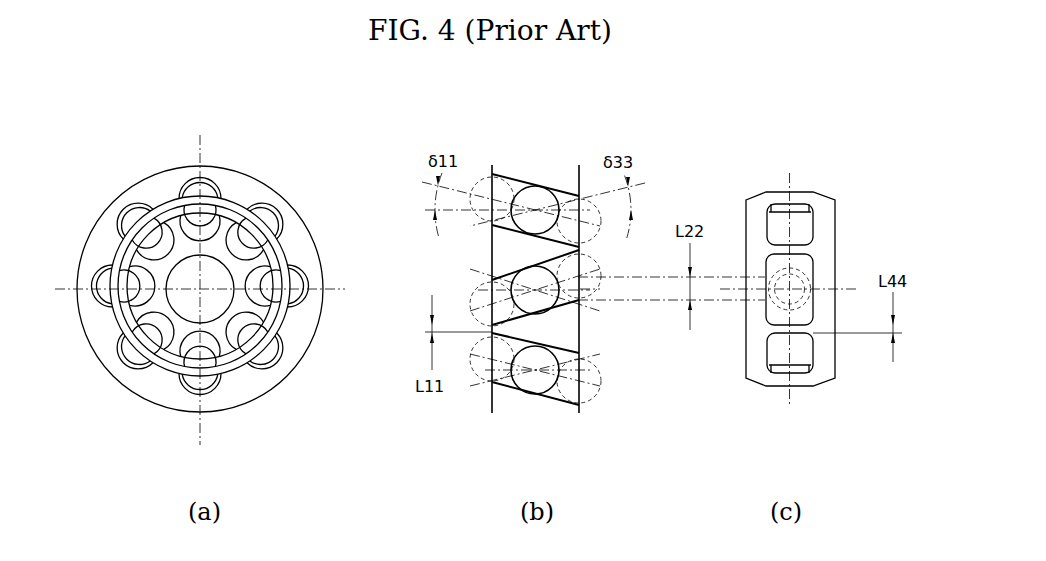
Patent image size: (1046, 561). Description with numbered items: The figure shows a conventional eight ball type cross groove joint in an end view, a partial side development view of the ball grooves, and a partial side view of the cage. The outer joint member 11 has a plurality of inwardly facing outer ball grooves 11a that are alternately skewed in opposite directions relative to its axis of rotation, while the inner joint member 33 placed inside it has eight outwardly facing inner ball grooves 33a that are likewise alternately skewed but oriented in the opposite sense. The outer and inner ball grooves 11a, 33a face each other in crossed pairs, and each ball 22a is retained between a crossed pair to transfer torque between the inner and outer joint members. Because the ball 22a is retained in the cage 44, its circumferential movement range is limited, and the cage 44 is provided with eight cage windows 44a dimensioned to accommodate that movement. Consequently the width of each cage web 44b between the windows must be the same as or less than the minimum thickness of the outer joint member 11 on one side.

The outer joint member 11 is at (178, 172).
The outer ball grooves 11a is at (152, 200).
The ball 22a is at (210, 192).
The inner joint member 33 is at (246, 209).
The inner ball grooves 33a is at (227, 188).
The cage 44 is at (306, 292).
The cage windows 44a is at (798, 352).
The cage web 44b is at (808, 248).